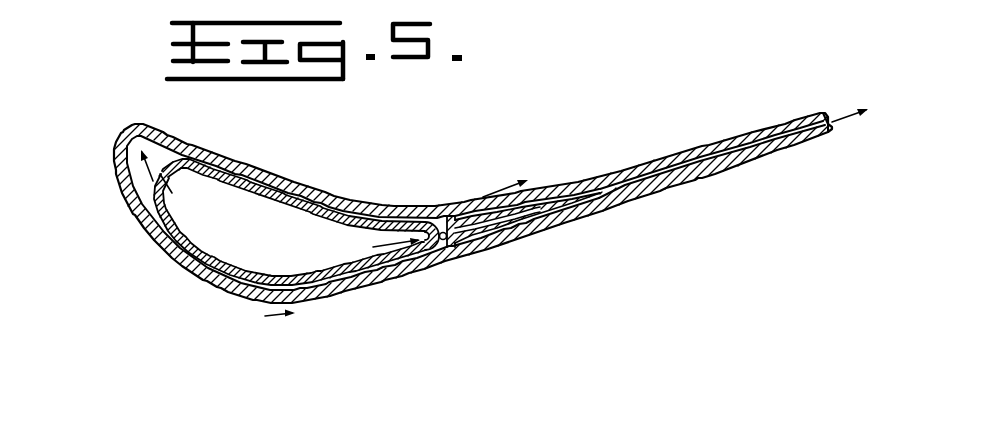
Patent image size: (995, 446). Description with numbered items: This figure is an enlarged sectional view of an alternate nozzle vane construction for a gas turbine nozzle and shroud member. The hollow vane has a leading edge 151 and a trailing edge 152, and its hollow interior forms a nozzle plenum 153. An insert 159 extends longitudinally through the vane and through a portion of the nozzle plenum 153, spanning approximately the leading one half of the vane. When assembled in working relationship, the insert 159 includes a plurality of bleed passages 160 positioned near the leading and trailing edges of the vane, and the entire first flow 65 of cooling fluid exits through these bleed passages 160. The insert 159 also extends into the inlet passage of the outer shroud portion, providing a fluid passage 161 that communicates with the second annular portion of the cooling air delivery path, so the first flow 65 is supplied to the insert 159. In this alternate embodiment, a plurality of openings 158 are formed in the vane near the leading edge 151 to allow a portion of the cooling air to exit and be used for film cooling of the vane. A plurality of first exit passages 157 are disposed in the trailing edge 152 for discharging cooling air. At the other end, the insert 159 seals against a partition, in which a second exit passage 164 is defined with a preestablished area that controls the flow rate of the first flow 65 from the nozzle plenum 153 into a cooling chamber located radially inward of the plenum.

The first flow of cooling fluid 65 is at (512, 176).
The leading edge 151 is at (118, 212).
The trailing edge 152 is at (750, 162).
The nozzle plenum 153 is at (123, 177).
The first exit passages 157 is at (830, 116).
The openings 158 is at (457, 203).
The insert 159 is at (233, 183).
The bleed passages 160 is at (170, 166).
The fluid passage 161 is at (273, 261).
The second exit passage 164 is at (441, 240).